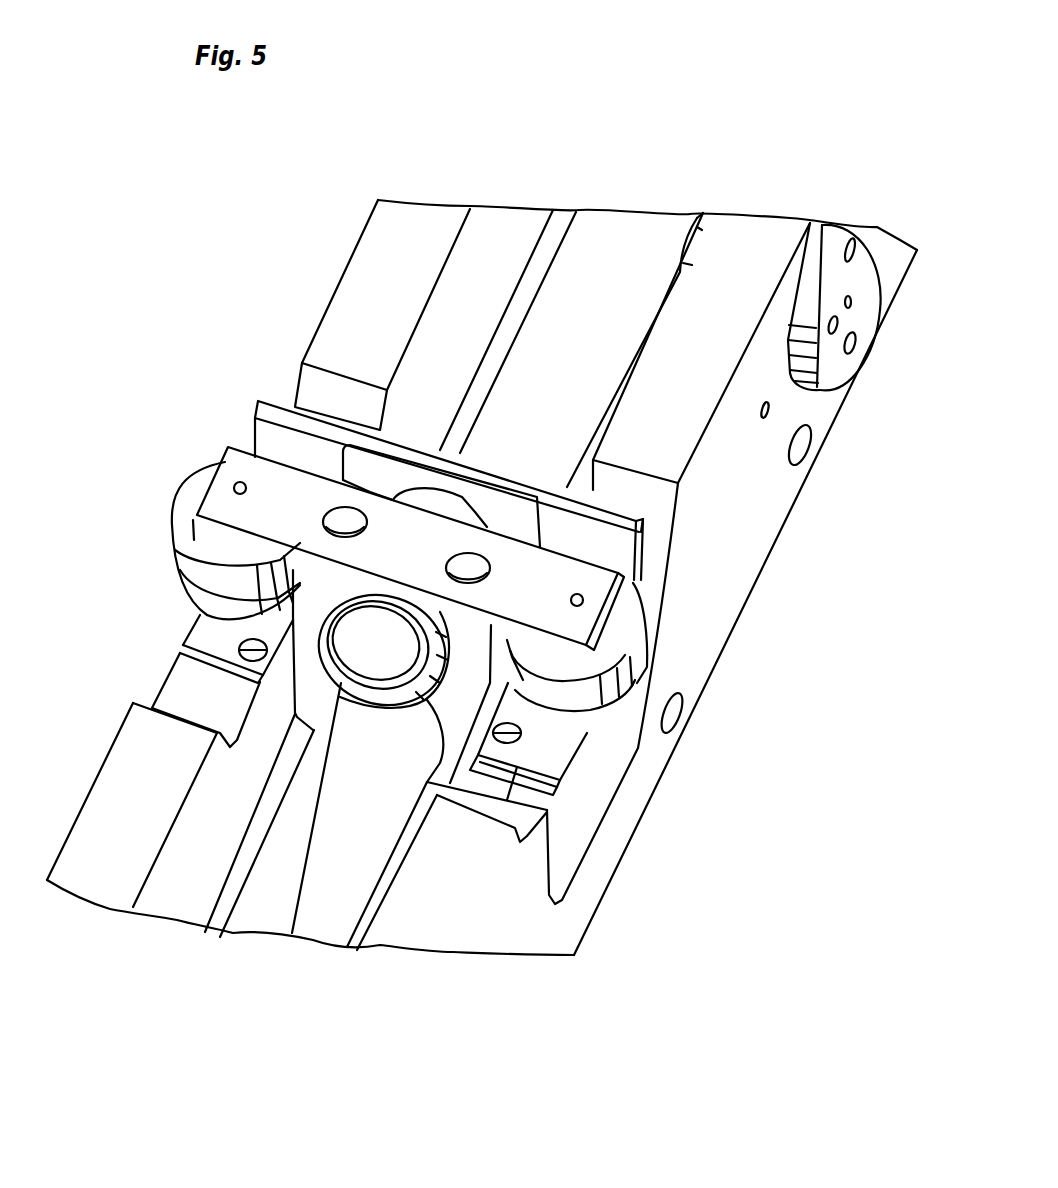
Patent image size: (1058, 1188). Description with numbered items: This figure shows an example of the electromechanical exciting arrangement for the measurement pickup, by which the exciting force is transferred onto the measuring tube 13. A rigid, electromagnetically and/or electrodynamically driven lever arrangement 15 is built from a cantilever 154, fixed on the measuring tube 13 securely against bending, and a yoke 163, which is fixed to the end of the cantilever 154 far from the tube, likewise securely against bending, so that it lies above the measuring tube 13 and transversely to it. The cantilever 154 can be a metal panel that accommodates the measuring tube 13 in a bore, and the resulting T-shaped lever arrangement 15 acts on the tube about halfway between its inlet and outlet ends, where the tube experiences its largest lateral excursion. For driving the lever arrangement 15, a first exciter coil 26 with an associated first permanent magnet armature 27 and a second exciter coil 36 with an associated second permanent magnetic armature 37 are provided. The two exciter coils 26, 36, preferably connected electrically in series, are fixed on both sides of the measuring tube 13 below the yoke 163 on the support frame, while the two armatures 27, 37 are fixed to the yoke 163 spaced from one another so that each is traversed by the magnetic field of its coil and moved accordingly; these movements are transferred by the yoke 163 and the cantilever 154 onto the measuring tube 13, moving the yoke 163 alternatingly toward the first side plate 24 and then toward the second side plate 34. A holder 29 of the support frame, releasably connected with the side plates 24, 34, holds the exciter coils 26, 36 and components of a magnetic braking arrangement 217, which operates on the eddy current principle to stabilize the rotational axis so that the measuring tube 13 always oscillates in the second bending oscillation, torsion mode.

The measuring tube 13 is at (365, 880).
The lever arrangement 15 is at (180, 470).
The first side plate 24 is at (340, 318).
The first exciter coil 26 is at (178, 588).
The first permanent magnet armature 27 is at (170, 492).
The holder 29 is at (625, 543).
The second side plate 34 is at (707, 363).
The second exciter coil 36 is at (615, 735).
The second permanent magnetic armature 37 is at (660, 680).
The cantilever 154 is at (315, 607).
The yoke 163 is at (250, 470).
The magnetic braking arrangement 217 is at (372, 655).